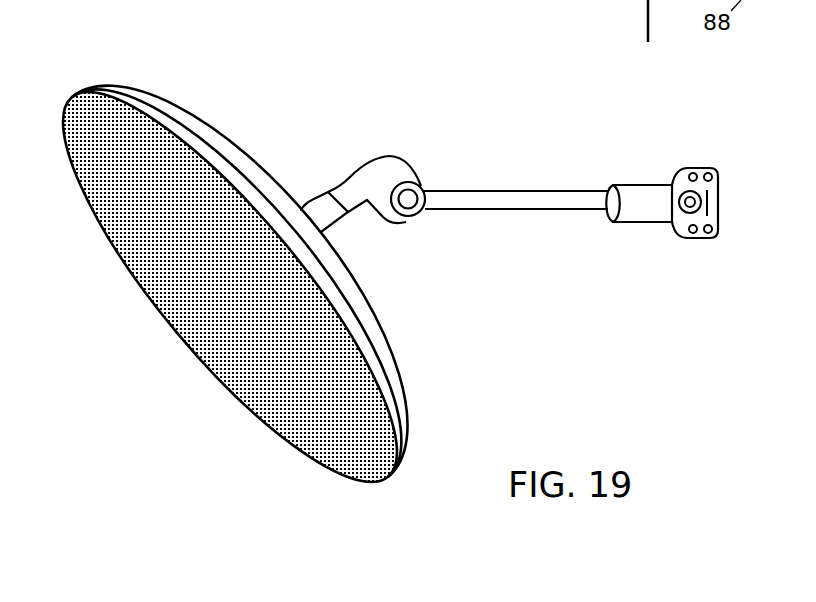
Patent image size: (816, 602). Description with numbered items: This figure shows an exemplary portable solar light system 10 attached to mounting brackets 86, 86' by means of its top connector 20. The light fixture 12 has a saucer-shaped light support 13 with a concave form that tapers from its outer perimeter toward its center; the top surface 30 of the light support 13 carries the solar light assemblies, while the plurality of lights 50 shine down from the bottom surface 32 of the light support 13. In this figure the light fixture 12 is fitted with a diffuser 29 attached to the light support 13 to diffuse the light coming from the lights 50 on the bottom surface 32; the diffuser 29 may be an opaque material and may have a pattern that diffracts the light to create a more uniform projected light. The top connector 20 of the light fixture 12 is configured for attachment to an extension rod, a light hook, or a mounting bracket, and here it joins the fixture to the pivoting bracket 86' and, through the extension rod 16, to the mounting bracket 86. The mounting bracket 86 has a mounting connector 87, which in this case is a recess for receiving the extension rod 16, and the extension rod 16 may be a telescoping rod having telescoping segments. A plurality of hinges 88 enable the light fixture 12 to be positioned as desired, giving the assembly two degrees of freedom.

The portable solar light system 10 is at (282, 108).
The light fixture 12 is at (180, 123).
The light support 13 is at (235, 147).
The extension rod 16 is at (516, 192).
The top connector 20 is at (317, 203).
The diffuser 29 is at (110, 236).
The top surface 30 is at (360, 316).
The bottom surface 32 is at (158, 318).
The light 50 is at (213, 383).
The mounting bracket 86 is at (680, 173).
The mounting bracket 86' is at (392, 154).
The mounting connector 87 is at (608, 183).
The hinge 88 is at (688, 231).